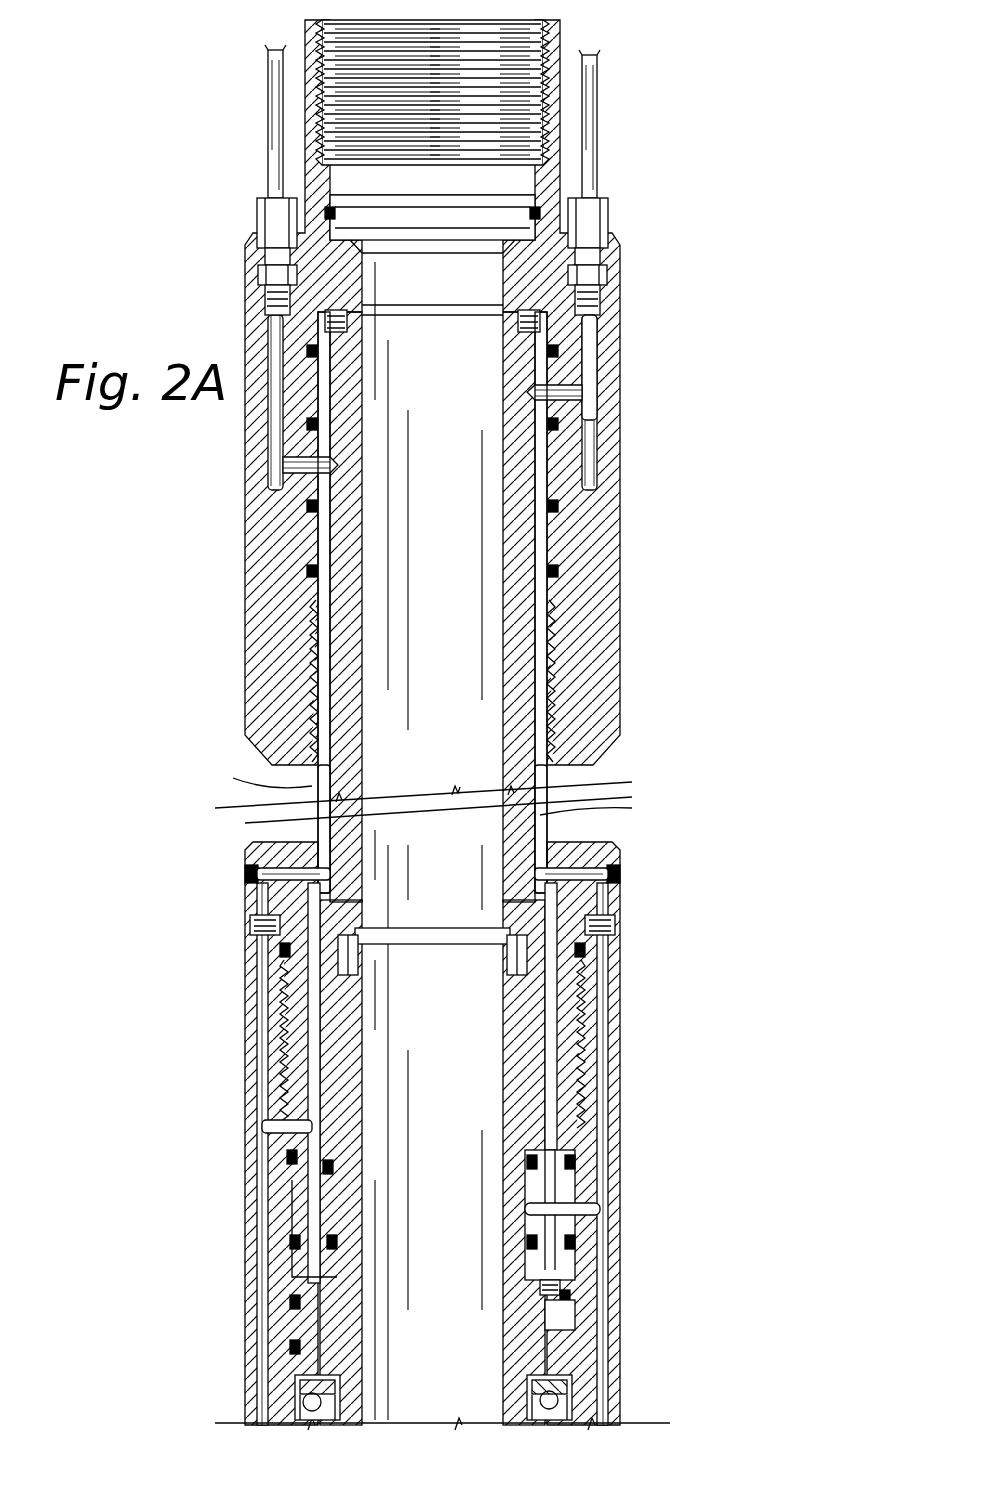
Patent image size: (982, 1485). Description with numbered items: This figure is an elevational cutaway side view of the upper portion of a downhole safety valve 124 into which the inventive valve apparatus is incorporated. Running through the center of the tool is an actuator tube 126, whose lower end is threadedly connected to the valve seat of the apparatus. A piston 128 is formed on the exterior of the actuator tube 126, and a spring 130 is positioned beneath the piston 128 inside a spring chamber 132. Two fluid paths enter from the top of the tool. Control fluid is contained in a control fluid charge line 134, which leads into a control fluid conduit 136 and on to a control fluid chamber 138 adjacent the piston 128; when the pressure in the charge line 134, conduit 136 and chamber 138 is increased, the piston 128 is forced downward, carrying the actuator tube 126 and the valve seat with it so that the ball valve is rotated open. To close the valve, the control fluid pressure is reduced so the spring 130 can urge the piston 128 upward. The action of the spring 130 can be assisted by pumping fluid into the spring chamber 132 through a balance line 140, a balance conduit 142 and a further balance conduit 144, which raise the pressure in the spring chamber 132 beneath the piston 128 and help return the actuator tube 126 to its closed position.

The downhole safety valve 124 is at (613, 82).
The actuator tube 126 is at (345, 1100).
The piston 128 is at (320, 1313).
The spring 130 is at (552, 1415).
The spring chamber 132 is at (300, 1395).
The control fluid charge line 134 is at (275, 133).
The control fluid conduit 136 is at (340, 775).
The control fluid chamber 138 is at (545, 1305).
The balance line 140 is at (585, 140).
The balance conduit 142 is at (528, 826).
The balance conduit 144 is at (592, 1345).